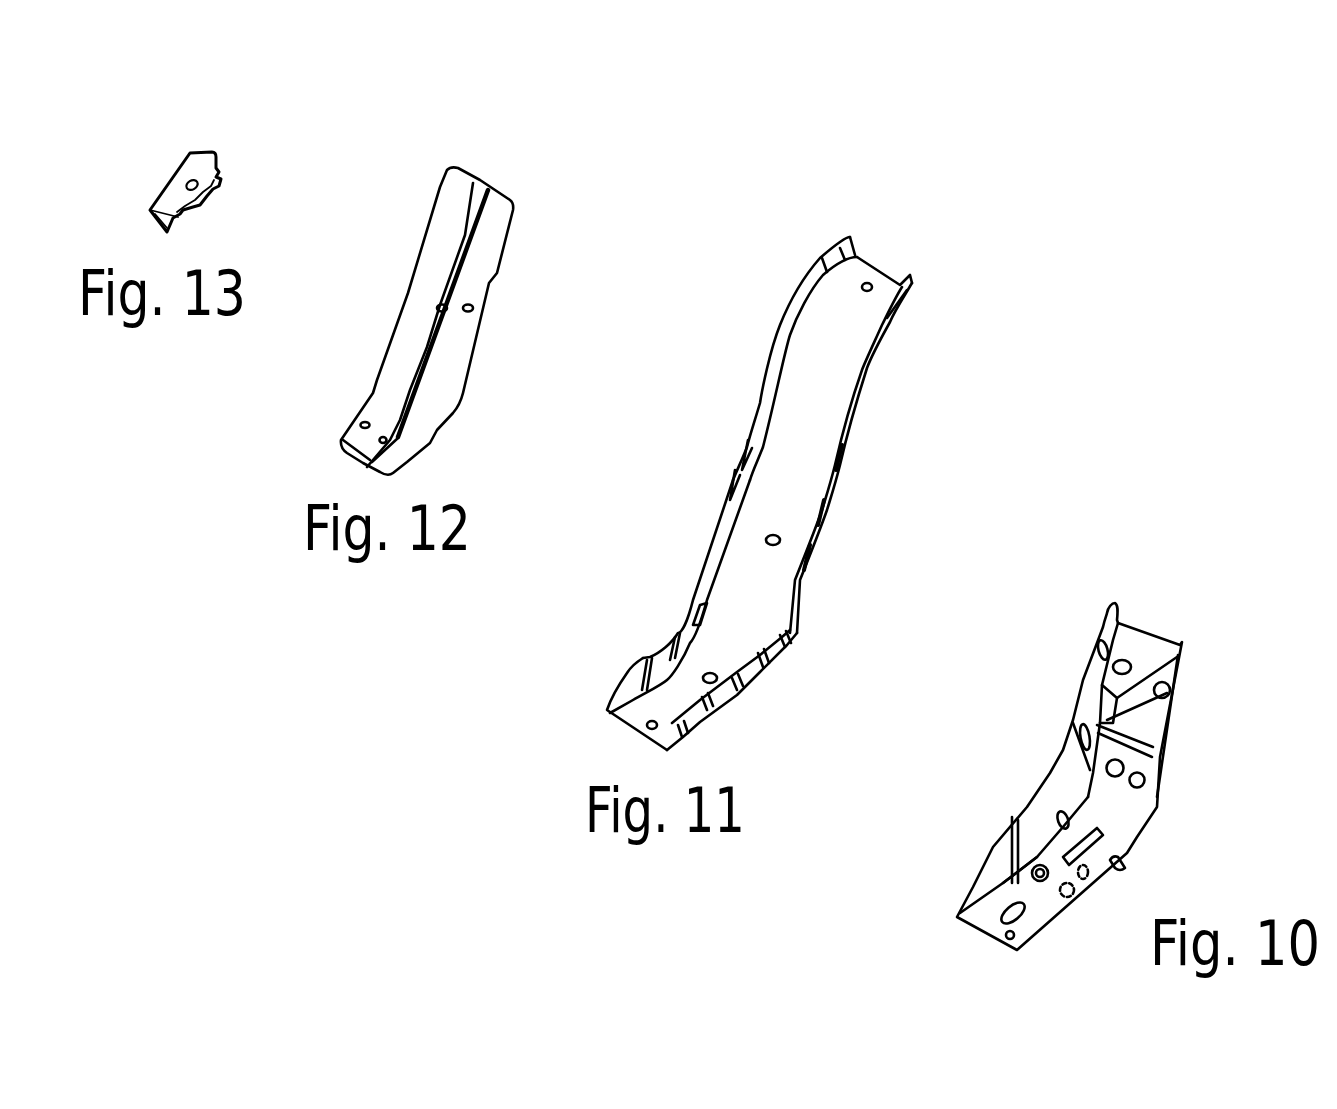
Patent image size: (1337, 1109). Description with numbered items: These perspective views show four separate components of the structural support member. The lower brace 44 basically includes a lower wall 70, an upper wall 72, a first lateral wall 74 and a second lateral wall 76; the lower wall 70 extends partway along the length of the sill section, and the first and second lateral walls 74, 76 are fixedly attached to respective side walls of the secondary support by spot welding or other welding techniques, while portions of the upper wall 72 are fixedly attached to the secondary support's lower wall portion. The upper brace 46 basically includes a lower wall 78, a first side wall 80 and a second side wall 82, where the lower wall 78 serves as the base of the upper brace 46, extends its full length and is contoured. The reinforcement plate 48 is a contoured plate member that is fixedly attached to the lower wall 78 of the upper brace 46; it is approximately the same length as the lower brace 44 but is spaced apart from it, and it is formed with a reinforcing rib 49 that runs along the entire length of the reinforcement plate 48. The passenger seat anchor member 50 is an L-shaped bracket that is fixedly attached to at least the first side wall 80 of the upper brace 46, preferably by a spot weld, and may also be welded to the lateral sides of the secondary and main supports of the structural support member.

In FIG. 10, the lower brace 44 is at (1086, 749).
In FIG. 11, the upper brace 46 is at (797, 493).
In FIG. 12, the reinforcement plate 48 is at (477, 320).
In FIG. 12, the reinforcing rib 49 is at (467, 230).
In FIG. 13, the passenger seat anchor member 50 is at (223, 157).
In FIG. 10, the lower wall 70 is at (973, 900).
In FIG. 10, the upper wall 72 is at (1140, 713).
In FIG. 10, the first lateral wall 74 is at (1057, 793).
In FIG. 10, the second lateral wall 76 is at (1140, 820).
In FIG. 11, the lower wall 78 is at (798, 427).
In FIG. 11, the first side wall 80 is at (790, 312).
In FIG. 11, the second side wall 82 is at (865, 368).